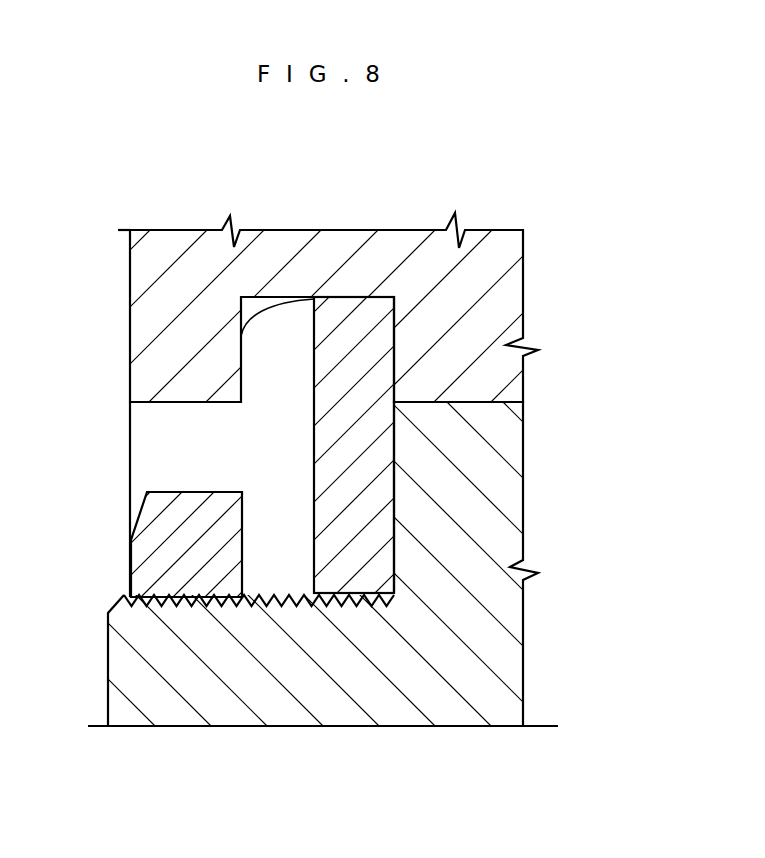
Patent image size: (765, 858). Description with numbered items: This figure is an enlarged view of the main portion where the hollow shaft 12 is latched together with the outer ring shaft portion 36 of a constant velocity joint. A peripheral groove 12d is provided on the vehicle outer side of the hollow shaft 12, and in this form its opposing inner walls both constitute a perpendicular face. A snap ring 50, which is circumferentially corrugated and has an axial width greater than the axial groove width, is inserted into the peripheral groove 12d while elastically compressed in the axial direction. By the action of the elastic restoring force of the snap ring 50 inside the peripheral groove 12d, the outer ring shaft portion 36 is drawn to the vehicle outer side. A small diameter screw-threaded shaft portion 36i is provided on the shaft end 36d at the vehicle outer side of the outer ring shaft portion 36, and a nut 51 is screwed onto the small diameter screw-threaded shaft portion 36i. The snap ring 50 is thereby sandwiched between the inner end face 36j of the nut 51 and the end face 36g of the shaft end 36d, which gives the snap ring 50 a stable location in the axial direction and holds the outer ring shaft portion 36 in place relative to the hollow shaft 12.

The hollow shaft 12 is at (485, 316).
The peripheral groove 12d is at (264, 297).
The snap ring 50 is at (345, 312).
The outer ring shaft portion 36 is at (483, 646).
The small diameter screw-threaded shaft portion 36i is at (125, 660).
The shaft end 36d is at (418, 447).
The end face 36g is at (395, 487).
The inner end face 36j is at (243, 514).
The nut 51 is at (175, 570).